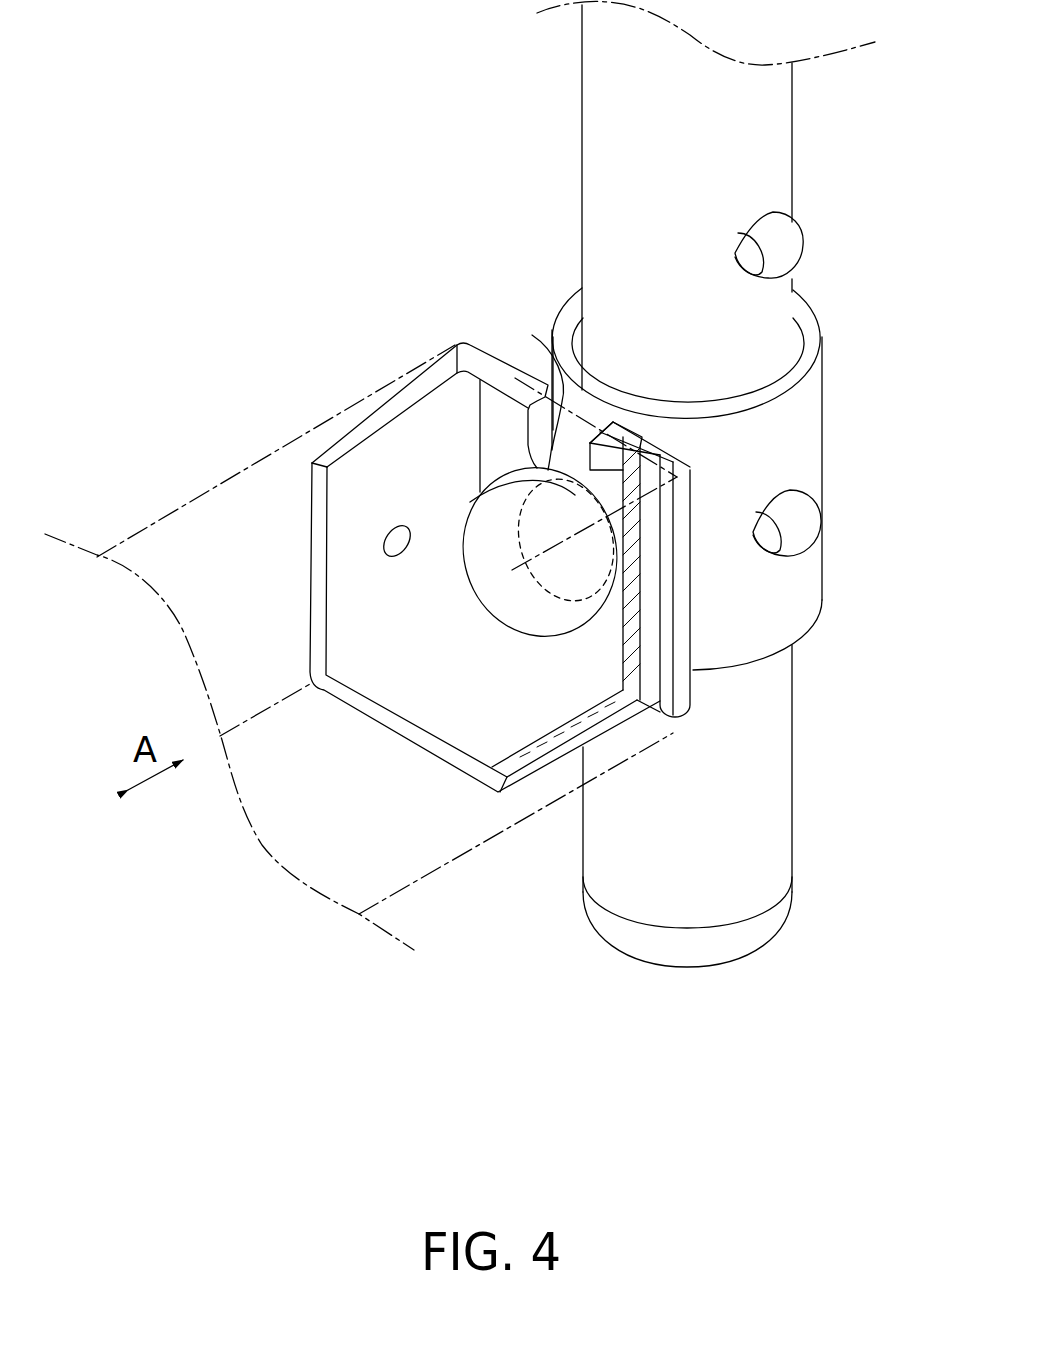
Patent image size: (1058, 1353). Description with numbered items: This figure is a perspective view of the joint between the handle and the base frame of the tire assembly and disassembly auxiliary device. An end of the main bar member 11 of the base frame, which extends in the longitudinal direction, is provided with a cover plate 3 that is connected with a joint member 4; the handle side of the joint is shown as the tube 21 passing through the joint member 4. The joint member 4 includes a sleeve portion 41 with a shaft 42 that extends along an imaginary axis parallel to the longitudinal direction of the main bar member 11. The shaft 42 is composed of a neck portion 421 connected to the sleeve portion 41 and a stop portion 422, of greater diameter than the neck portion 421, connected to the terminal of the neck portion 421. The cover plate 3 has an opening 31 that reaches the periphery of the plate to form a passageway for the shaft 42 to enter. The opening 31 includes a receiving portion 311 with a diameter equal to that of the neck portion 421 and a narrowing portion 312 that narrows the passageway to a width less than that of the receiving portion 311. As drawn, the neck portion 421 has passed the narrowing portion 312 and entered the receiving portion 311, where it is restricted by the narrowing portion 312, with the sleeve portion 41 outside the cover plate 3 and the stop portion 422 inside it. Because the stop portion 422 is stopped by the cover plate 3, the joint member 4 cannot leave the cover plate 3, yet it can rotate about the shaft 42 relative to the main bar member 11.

The main bar member 11 is at (172, 520).
The tube 21 is at (770, 137).
The cover plate 3 is at (574, 497).
The opening 31 is at (583, 394).
The receiving portion 311 is at (563, 580).
The narrowing portion 312 is at (550, 470).
The joint member 4 is at (636, 540).
The sleeve portion 41 is at (805, 450).
The shaft 42 is at (455, 565).
The neck portion 421 is at (525, 480).
The stop portion 422 is at (520, 607).